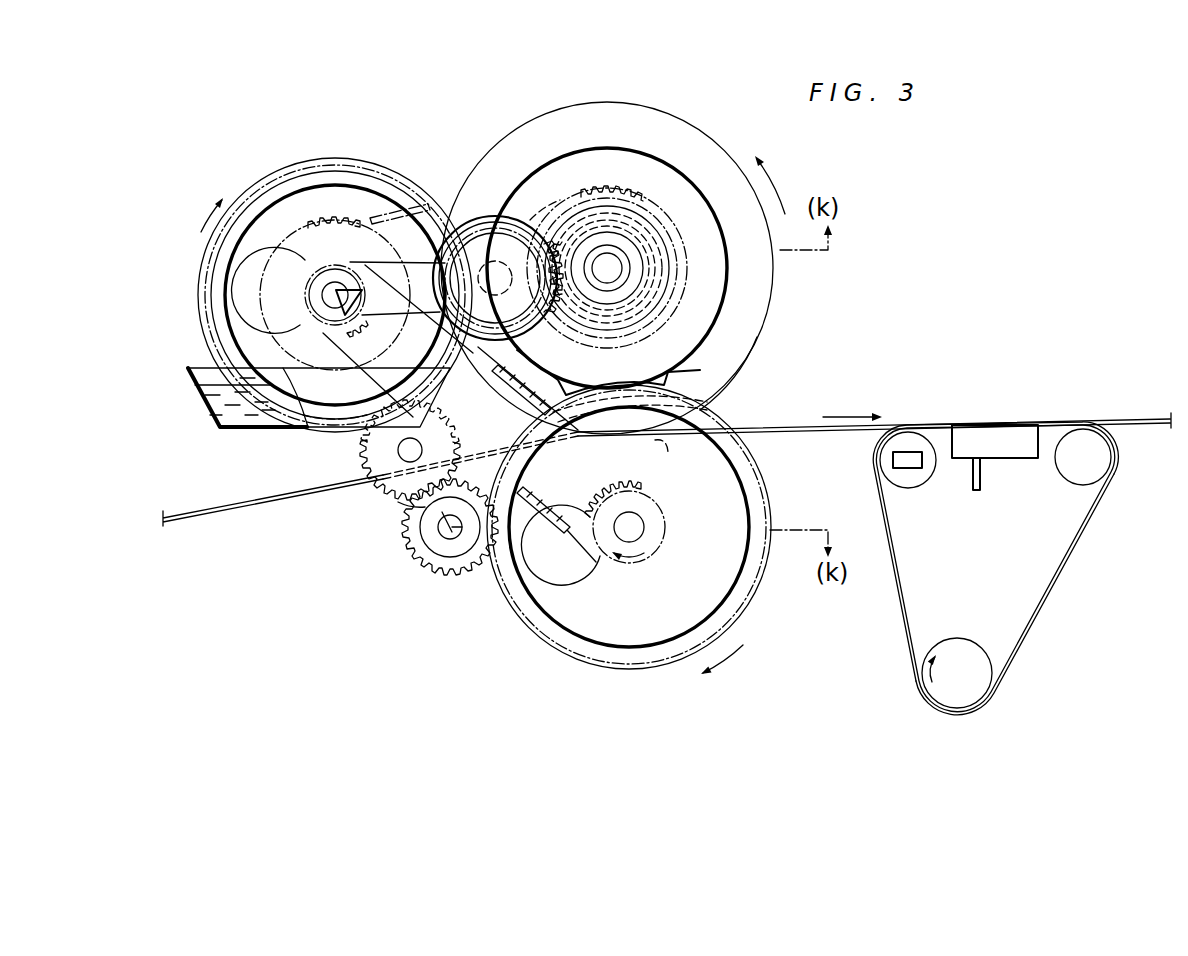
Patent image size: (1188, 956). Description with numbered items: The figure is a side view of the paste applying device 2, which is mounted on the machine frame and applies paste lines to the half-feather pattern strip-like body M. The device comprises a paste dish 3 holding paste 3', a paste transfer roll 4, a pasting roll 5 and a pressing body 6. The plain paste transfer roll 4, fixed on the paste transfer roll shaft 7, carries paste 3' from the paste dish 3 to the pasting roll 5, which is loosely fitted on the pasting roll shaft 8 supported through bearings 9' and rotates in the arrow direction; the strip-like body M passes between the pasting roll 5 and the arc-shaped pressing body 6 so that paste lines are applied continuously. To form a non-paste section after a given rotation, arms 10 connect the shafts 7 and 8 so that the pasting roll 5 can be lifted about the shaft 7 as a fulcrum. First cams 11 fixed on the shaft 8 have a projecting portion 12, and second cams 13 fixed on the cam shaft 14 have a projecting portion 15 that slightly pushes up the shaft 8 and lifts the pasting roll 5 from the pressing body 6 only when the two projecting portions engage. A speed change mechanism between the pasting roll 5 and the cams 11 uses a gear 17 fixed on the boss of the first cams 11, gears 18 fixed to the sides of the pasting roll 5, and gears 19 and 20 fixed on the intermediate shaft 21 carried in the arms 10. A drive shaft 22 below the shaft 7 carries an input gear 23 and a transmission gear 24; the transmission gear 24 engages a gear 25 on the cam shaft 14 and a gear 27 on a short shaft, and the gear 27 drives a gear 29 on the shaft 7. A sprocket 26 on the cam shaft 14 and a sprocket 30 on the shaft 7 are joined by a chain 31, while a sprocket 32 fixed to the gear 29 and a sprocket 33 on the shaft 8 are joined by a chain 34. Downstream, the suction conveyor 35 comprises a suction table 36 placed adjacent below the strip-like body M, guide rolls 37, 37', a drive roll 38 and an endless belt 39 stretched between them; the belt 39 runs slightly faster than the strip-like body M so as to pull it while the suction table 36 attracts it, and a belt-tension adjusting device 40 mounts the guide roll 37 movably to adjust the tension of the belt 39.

The paste applying device 2 is at (250, 170).
The paste dish 3 is at (319, 415).
The paste 3' is at (235, 427).
The paste transfer roll 4 is at (335, 195).
The pasting roll 5 is at (648, 114).
The pressing body 6 is at (668, 455).
The paste transfer roll shaft 7 is at (323, 295).
The pasting roll shaft 8 is at (620, 262).
The bearing 9' is at (622, 268).
The arm 10 is at (417, 253).
The first cam 11 is at (757, 337).
The projecting portion of the first cam 12 is at (668, 384).
The second cam 13 is at (725, 497).
The cam shaft 14 is at (622, 535).
The projecting portion of the second cam 15 is at (702, 394).
The gear 17 is at (603, 212).
The gear 18 is at (641, 222).
The gear 19 is at (491, 216).
The gear 20 is at (473, 210).
The intermediate shaft 21 is at (485, 368).
The drive shaft 22 is at (428, 560).
The input gear 23 is at (423, 540).
The transmission gear 24 is at (406, 513).
The gear 25 is at (765, 578).
The sprocket 26 is at (667, 548).
The gear 27 is at (362, 452).
The gear 29 is at (287, 170).
The sprocket 30 is at (307, 263).
The chain 31 is at (460, 447).
The sprocket 32 is at (277, 247).
The sprocket 33 is at (588, 190).
The chain 34 is at (415, 192).
The suction conveyor 35 is at (1003, 415).
The suction table 36 is at (967, 440).
The guide roll 37 is at (908, 484).
The guide roll 37' is at (1111, 466).
The drive roll 38 is at (963, 652).
The endless belt 39 is at (1053, 588).
The belt-tension adjusting device 40 is at (917, 468).
The half-feather pattern strip-like body M is at (238, 508).